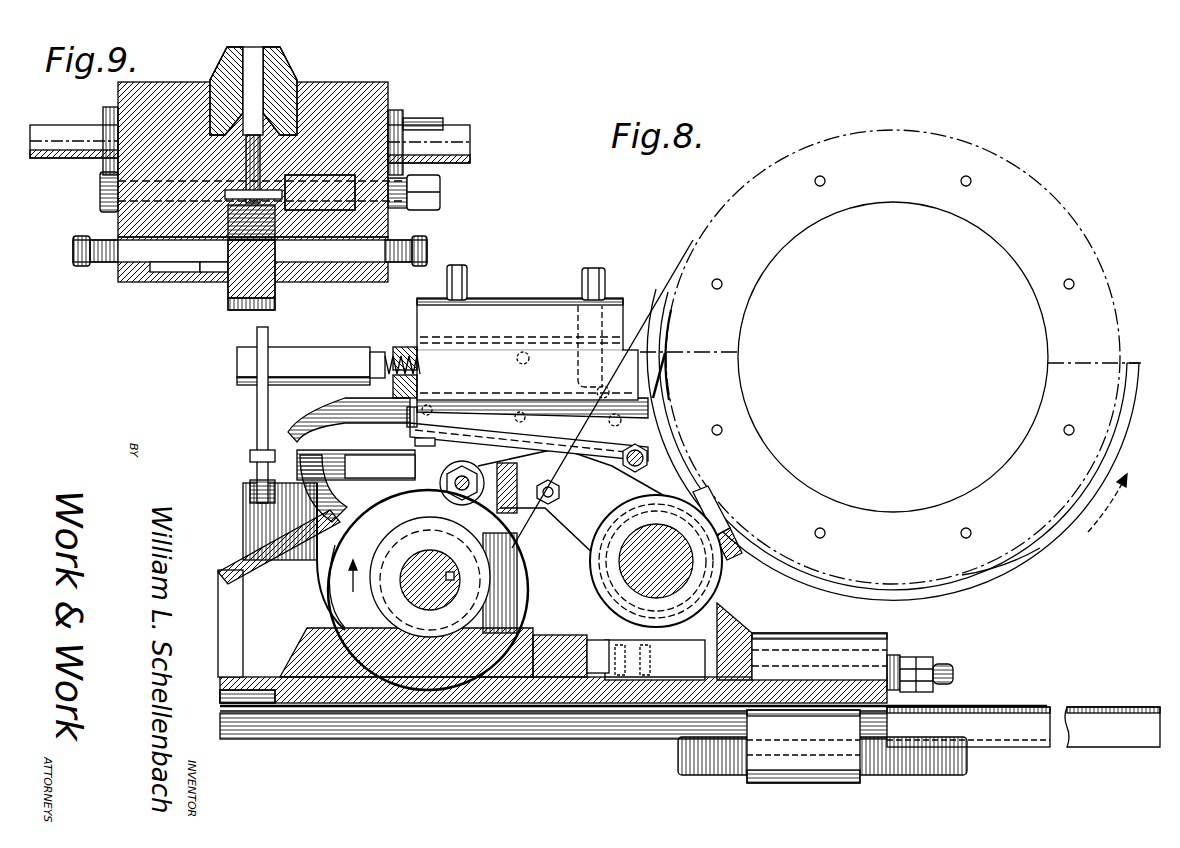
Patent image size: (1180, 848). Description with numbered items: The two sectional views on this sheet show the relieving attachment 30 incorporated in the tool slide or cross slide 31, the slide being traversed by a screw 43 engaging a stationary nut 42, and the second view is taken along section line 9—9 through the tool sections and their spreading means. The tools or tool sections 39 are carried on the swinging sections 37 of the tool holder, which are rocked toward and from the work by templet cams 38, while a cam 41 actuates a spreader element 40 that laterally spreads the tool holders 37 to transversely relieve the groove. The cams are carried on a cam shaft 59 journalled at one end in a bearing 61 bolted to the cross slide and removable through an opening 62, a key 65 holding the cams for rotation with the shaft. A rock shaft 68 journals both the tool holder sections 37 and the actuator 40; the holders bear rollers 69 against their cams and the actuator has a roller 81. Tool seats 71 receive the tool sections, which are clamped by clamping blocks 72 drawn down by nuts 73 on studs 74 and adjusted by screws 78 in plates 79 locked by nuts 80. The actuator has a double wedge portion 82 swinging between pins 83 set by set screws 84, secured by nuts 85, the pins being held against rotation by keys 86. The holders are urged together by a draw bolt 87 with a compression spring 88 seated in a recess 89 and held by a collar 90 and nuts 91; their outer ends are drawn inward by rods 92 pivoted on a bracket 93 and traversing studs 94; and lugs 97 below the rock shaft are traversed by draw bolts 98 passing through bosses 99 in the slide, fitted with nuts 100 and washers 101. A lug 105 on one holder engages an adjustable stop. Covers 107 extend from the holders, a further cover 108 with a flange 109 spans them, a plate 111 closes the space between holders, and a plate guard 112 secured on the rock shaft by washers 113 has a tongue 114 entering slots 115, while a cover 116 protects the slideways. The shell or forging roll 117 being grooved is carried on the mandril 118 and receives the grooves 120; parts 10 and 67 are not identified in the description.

In FIG. 8, the section line 9- 9 is at (672, 334).
In FIG. 8, the slide block 10 is at (400, 472).
In FIG. 8, the relieving attachment 30 is at (475, 357).
In FIG. 8, the tool slide 31 is at (537, 702).
In FIG. 9, the swinging tool holder sections 37 is at (165, 92).
In FIG. 8, the swinging tool holder sections 37 is at (668, 418).
In FIG. 8, the templet cams 38 is at (340, 585).
In FIG. 9, the tools 39 is at (262, 72).
In FIG. 8, the tools 39 is at (532, 356).
In FIG. 9, the actuator 40 is at (245, 302).
In FIG. 8, the cam 41 is at (395, 550).
In FIG. 8, the stationary nut 42 is at (775, 783).
In FIG. 8, the screw 43 is at (700, 775).
In FIG. 8, the cam shaft 59 is at (437, 553).
In FIG. 8, the bearing 61 is at (345, 655).
In FIG. 8, the opening 62 is at (548, 502).
In FIG. 8, the key 65 is at (440, 611).
In FIG. 8, the bracket 67 is at (315, 646).
In FIG. 8, the rock shaft 68 is at (630, 562).
In FIG. 8, the rollers 69 is at (475, 440).
In FIG. 9, the tool seats 71 is at (292, 92).
In FIG. 8, the tool seats 71 is at (545, 400).
In FIG. 8, the clamping blocks 72 is at (605, 320).
In FIG. 8, the nuts 73 is at (578, 275).
In FIG. 8, the studs 74 is at (598, 270).
In FIG. 8, the screws 78 is at (375, 356).
In FIG. 8, the plates 79 is at (396, 350).
In FIG. 8, the nuts 80 is at (397, 345).
In FIG. 8, the roller 81 is at (450, 540).
In FIG. 9, the double wedge portion 82 is at (285, 280).
In FIG. 9, the pins 83 is at (170, 272).
In FIG. 8, the pins 83 is at (556, 490).
In FIG. 9, the set screws 84 is at (100, 265).
In FIG. 9, the nuts 85 is at (108, 240).
In FIG. 9, the keys 86 is at (205, 272).
In FIG. 9, the draw bolt 87 is at (100, 186).
In FIG. 8, the draw bolt 87 is at (652, 462).
In FIG. 9, the compression spring 88 is at (420, 130).
In FIG. 9, the recess 89 is at (352, 176).
In FIG. 9, the collar 90 is at (398, 206).
In FIG. 9, the nuts 91 is at (441, 194).
In FIG. 8, the rods 92 is at (257, 412).
In FIG. 8, the bracket 93 is at (252, 500).
In FIG. 8, the studs 94 is at (300, 358).
In FIG. 8, the lugs 97 is at (650, 662).
In FIG. 8, the draw bolts 98 is at (948, 665).
In FIG. 8, the bosses 99 is at (835, 647).
In FIG. 8, the nuts 100 is at (917, 657).
In FIG. 8, the washer 101 is at (895, 656).
In FIG. 8, the lug 105 is at (640, 712).
In FIG. 9, the covers 107 is at (72, 158).
In FIG. 8, the covers 107 is at (255, 462).
In FIG. 8, the cover 108 is at (325, 414).
In FIG. 8, the flange 109 is at (450, 405).
In FIG. 8, the plate 111 is at (540, 305).
In FIG. 8, the plate guard 112 is at (716, 516).
In FIG. 8, the washers 113 is at (735, 548).
In FIG. 8, the tongue 114 is at (540, 446).
In FIG. 8, the slots 115 is at (425, 440).
In FIG. 8, the cover 116 is at (985, 707).
In FIG. 8, the shell 117 is at (980, 560).
In FIG. 8, the mandril 118 is at (995, 242).
In FIG. 8, the grooves 120 is at (1043, 545).